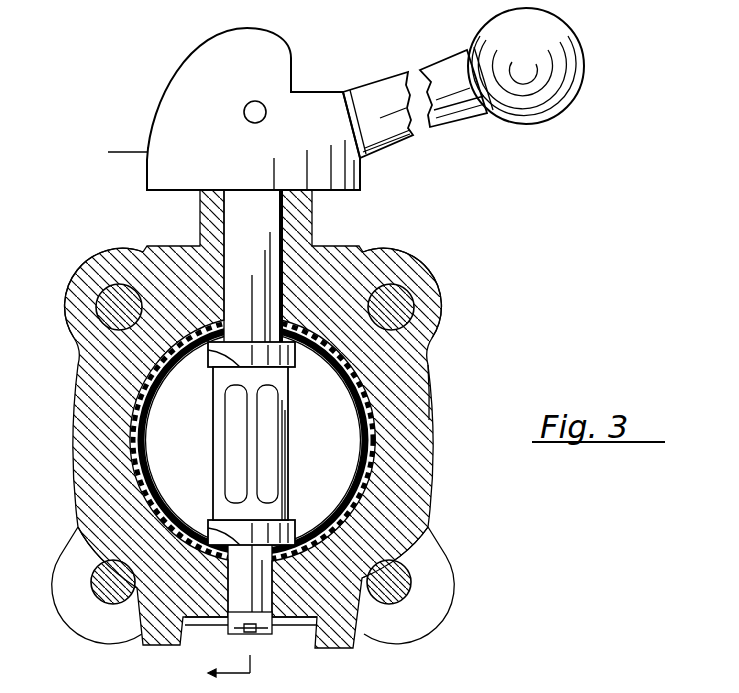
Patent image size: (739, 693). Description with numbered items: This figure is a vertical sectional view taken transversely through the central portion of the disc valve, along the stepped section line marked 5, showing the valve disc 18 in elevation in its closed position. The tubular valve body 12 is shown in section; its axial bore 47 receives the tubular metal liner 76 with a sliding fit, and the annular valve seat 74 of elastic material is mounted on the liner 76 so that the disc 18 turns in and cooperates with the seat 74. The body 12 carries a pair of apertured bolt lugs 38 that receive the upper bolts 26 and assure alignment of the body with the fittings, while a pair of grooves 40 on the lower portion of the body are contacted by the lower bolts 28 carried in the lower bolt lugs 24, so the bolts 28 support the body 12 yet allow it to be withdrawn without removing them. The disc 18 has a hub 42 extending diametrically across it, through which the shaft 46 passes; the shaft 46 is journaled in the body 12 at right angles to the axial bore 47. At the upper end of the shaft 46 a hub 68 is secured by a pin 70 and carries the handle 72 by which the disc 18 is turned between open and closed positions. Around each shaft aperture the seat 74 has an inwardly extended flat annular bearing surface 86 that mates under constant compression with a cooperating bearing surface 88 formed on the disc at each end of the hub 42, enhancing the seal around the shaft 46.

The section line 5- 5 is at (170, 416).
The valve body 12 is at (90, 378).
The disc element 18 is at (190, 452).
The lower bolt lugs 24 is at (92, 618).
The bolt 26 is at (116, 284).
The bolt 28 is at (95, 578).
The bolt lugs 38 is at (73, 292).
The grooves 40 is at (100, 535).
The hub 42 is at (283, 401).
The shaft 46 is at (262, 247).
The axial bore 47 is at (395, 385).
The hub 68 is at (195, 68).
The pin 70 is at (257, 101).
The handle 72 is at (392, 66).
The valve seat 74 is at (369, 452).
The metal liner 76 is at (365, 423).
The bearing surface 86 is at (218, 312).
The bearing surfaces 88 is at (209, 364).